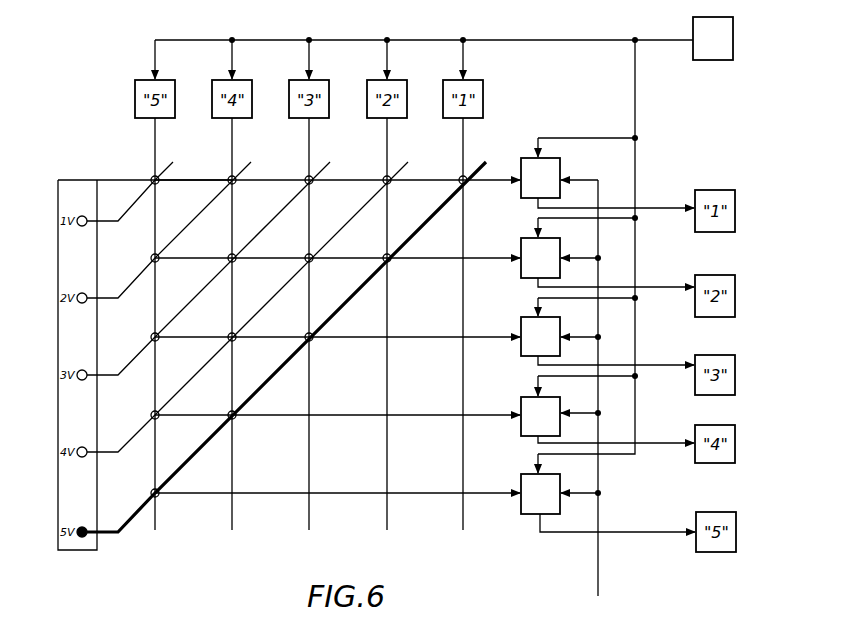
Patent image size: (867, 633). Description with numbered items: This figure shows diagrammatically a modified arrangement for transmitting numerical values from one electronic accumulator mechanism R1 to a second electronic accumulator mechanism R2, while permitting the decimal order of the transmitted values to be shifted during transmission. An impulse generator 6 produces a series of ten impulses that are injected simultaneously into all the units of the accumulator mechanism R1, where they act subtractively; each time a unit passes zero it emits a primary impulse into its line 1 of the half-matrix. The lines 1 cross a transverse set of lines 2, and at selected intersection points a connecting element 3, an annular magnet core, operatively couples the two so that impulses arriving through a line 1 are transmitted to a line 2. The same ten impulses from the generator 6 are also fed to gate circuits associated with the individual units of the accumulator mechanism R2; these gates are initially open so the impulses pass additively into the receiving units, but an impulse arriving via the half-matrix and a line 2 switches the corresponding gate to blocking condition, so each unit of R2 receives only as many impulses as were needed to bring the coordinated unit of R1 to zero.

The line 1 is at (315, 324).
The line 2 is at (289, 326).
The connecting element 3 is at (200, 189).
The impulse generator 6 is at (713, 38).
The electronic accumulator mechanism R1 is at (424, 28).
The electronic accumulator mechanism R2 is at (663, 388).